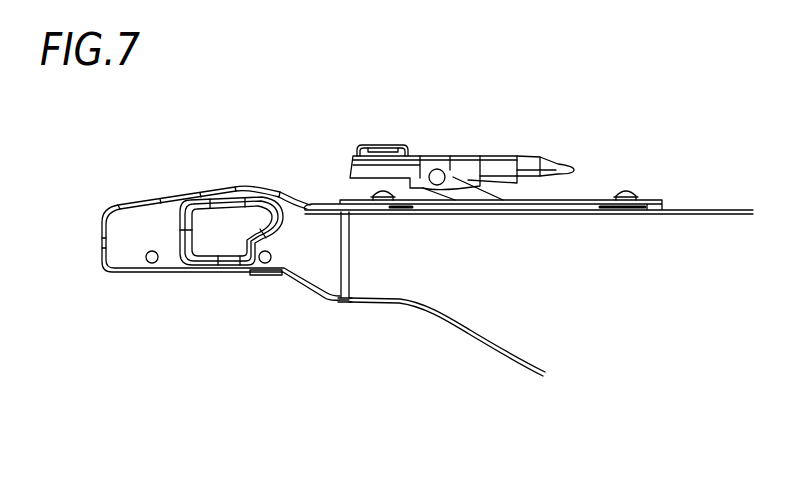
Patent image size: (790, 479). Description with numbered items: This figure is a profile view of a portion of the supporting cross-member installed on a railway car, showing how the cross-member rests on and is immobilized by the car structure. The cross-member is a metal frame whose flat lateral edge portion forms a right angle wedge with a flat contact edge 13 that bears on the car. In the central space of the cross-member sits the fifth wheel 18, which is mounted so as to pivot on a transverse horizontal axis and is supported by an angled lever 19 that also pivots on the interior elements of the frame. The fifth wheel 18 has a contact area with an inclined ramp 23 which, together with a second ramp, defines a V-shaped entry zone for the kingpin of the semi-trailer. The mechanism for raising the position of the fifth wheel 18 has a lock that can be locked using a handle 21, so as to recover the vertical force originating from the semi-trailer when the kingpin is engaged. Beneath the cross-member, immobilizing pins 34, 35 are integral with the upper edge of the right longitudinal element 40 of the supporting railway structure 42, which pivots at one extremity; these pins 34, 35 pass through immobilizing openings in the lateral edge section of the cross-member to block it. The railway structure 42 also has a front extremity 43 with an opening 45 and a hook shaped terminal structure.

The flat contact edge 13 is at (575, 200).
The fifth wheel 18 is at (452, 141).
The angled lever 19 is at (465, 190).
The handle 21 is at (363, 124).
The inclined ramp 23 is at (536, 152).
The immobilizing pin 34 is at (383, 192).
The immobilizing pin 35 is at (628, 190).
The right longitudinal element 40 is at (453, 292).
The supporting railway structure 42 is at (517, 330).
The front extremity 43 is at (138, 287).
The opening 45 is at (218, 232).